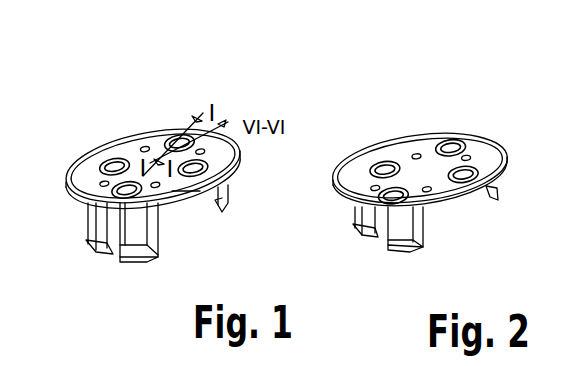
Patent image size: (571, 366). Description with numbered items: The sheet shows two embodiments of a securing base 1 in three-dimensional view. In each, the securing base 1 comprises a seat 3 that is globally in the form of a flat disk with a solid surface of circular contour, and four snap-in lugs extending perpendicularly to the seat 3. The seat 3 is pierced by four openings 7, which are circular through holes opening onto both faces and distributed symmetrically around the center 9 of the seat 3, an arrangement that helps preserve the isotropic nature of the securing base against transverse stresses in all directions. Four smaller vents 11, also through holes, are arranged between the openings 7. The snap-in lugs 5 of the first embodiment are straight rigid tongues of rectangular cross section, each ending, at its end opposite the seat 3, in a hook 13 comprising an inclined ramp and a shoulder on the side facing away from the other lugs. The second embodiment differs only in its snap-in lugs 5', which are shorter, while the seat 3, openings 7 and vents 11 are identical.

In FIG. 1, the securing base 1 is at (62, 150).
In FIG. 2, the securing base 1 is at (449, 168).
In FIG. 1, the seat 3 is at (246, 96).
In FIG. 2, the seat 3 is at (496, 130).
In FIG. 1, the snap-in lugs 5 is at (150, 240).
In FIG. 2, the snap-in lugs 5' is at (432, 245).
In FIG. 1, the openings 7 is at (117, 155).
In FIG. 2, the openings 7 is at (378, 159).
In FIG. 1, the center 9 is at (178, 189).
In FIG. 1, the vents 11 is at (102, 173).
In FIG. 2, the vents 11 is at (418, 153).
In FIG. 1, the hook 13 is at (93, 243).